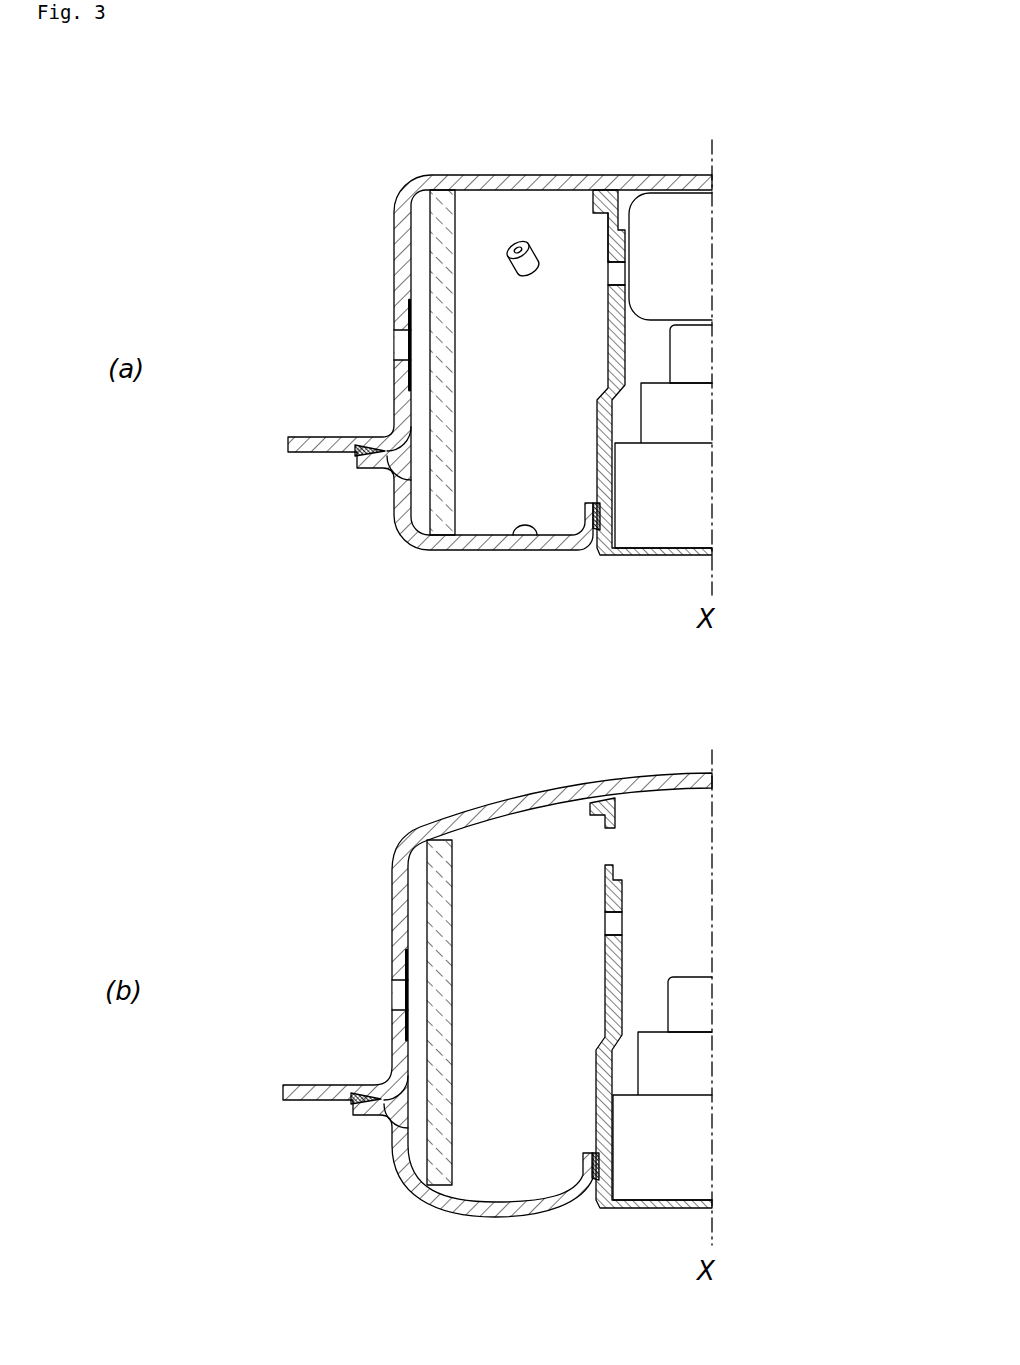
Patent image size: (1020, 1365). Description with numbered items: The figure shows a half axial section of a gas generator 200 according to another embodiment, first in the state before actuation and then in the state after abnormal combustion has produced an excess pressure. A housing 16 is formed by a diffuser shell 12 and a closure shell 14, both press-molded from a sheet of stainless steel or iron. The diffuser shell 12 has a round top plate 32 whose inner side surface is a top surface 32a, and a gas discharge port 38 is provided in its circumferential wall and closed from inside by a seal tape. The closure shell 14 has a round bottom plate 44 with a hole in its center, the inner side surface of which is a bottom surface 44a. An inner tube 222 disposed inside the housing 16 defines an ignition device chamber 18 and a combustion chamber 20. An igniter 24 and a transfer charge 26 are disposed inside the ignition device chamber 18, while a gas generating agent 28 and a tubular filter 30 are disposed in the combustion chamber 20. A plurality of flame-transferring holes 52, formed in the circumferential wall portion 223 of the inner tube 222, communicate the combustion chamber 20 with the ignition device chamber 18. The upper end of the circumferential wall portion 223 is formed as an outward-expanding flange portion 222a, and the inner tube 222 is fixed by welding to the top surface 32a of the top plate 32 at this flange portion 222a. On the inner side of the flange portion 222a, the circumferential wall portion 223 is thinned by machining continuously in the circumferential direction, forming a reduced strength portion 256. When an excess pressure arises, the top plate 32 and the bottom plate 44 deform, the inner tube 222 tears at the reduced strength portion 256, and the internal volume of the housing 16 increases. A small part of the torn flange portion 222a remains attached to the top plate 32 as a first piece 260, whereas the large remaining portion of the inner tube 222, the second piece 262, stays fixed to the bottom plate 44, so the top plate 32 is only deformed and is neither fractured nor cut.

The gas generator 200 is at (674, 152).
The top plate 32 is at (518, 182).
The top surface 32a is at (482, 188).
The flange portion 222a is at (600, 190).
The reduced strength portion 256 is at (608, 218).
The gas generating agent 28 is at (518, 271).
The flame-transferring holes 52 is at (607, 272).
The circumferential wall portion 223 is at (607, 318).
The inner tube 222 is at (615, 340).
The transfer charge 26 is at (694, 258).
The ignition device chamber 18 is at (662, 367).
The igniter 24 is at (690, 410).
The tubular filter 30 is at (455, 345).
The gas discharge port 38 is at (397, 350).
The combustion chamber 20 is at (508, 447).
The housing 16 is at (273, 769).
The diffuser shell 12 is at (396, 385).
The closure shell 14 is at (392, 505).
The bottom plate 44 is at (488, 551).
The bottom surface 44a is at (536, 549).
The first piece 260 is at (598, 801).
The second piece 262 is at (597, 1012).